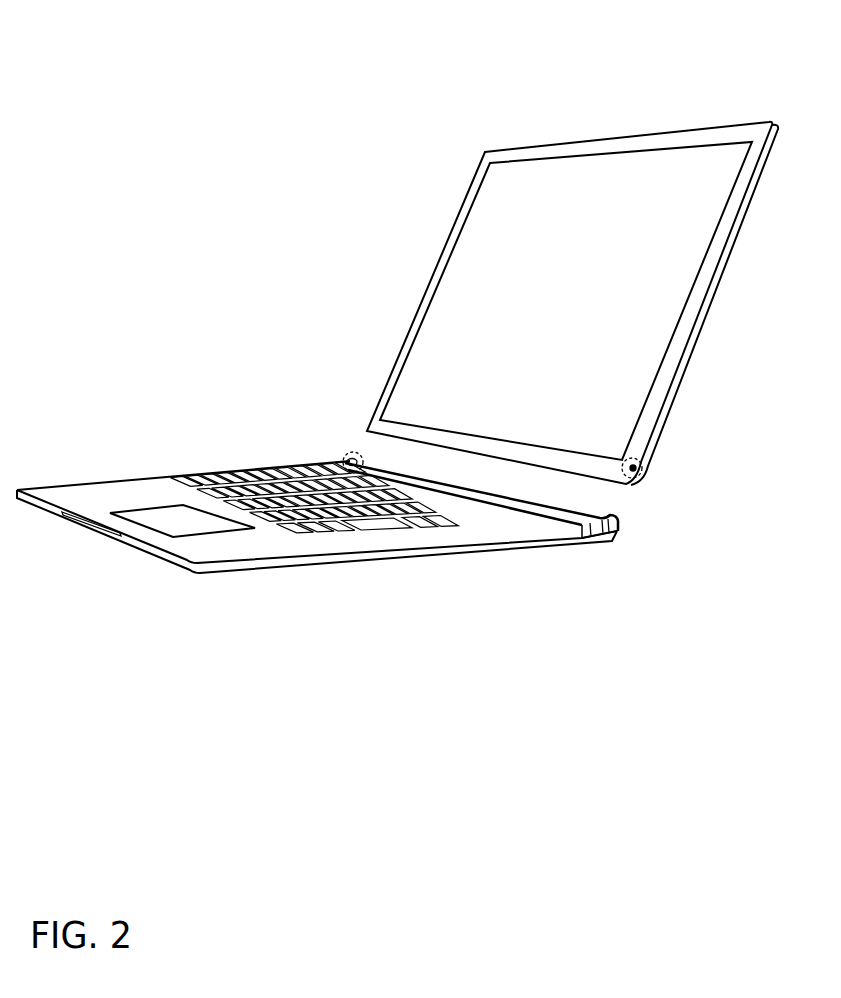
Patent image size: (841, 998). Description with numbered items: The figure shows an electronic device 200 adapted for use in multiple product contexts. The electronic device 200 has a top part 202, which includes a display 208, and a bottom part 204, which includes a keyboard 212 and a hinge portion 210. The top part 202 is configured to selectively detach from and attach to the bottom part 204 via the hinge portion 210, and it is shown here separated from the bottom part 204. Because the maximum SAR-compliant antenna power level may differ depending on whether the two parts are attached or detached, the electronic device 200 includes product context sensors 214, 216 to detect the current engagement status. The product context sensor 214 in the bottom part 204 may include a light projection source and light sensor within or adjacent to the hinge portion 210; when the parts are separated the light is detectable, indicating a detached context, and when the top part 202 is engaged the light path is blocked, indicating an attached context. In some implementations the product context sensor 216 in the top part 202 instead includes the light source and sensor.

The electronic device 200 is at (130, 57).
The top part 202 is at (442, 252).
The bottom part 204 is at (123, 482).
The display 208 is at (566, 301).
The hinge portion 210 is at (613, 533).
The keyboard 212 is at (422, 533).
The product context sensor 214 is at (343, 459).
The product context sensor 216 is at (644, 472).